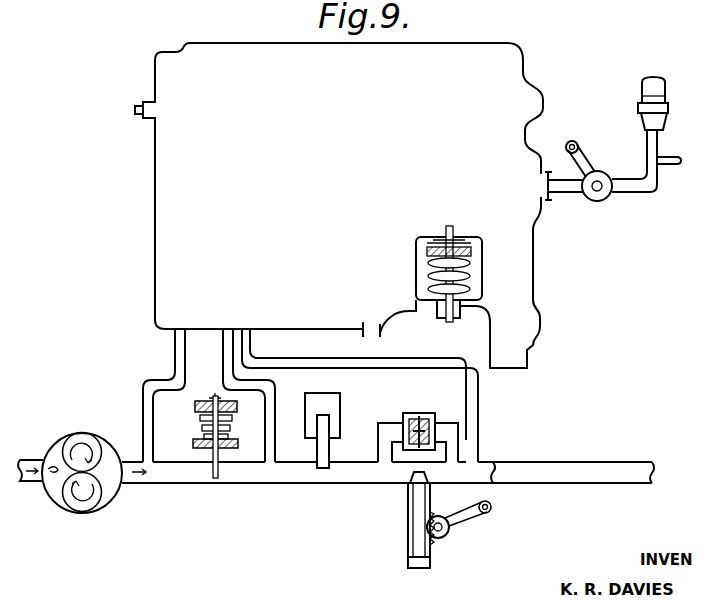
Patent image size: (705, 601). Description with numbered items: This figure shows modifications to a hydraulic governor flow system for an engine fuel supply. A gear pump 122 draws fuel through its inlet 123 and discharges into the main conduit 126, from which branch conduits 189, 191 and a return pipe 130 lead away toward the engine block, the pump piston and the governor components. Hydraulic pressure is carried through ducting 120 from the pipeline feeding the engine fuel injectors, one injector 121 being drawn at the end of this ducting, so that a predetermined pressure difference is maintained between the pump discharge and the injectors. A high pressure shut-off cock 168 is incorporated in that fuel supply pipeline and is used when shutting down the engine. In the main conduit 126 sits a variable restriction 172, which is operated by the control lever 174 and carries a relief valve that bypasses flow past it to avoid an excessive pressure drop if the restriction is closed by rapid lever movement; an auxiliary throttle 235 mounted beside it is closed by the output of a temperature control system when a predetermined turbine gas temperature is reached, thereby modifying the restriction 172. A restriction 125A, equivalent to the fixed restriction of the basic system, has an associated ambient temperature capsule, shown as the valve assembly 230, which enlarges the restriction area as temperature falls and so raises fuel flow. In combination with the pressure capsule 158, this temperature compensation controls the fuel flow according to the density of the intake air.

The ducting 120 is at (672, 166).
The fuel injector 121 is at (648, 125).
The gear pump 122 is at (87, 492).
The pump inlet 123 is at (35, 461).
The restriction 125A is at (218, 472).
The main conduit 126 is at (568, 468).
The return pipe 130 is at (143, 410).
The pressure capsule 158 is at (470, 272).
The high pressure shut-off cock 168 is at (594, 201).
The variable restriction 172 is at (417, 473).
The control lever 174 is at (468, 517).
The conduit 189 is at (225, 370).
The conduit 191 is at (256, 356).
The relief valve 230 is at (206, 428).
The auxiliary throttle 235 is at (330, 398).